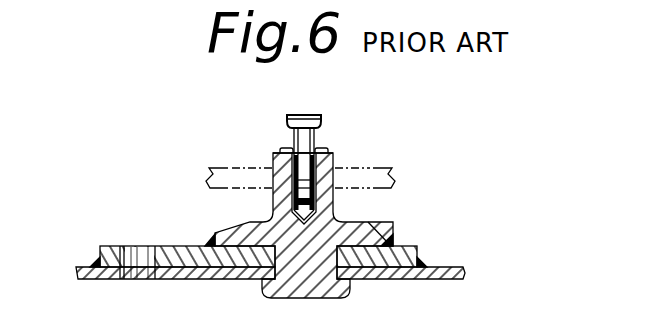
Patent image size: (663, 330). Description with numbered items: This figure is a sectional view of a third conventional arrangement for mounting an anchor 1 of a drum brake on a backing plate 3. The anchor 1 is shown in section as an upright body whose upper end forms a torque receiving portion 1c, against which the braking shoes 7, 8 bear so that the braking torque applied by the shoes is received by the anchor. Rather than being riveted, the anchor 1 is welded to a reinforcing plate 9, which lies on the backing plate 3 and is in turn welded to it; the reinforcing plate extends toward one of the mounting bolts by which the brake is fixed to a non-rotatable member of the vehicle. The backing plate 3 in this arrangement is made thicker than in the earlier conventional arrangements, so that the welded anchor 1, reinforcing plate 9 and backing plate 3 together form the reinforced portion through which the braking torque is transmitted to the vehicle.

The anchor 1 is at (333, 148).
The torque receiving portion 1c is at (272, 160).
The backing plate 3 is at (464, 275).
The braking shoe 7 is at (227, 173).
The braking shoe 8 is at (377, 170).
The reinforcing plate 9 is at (413, 247).